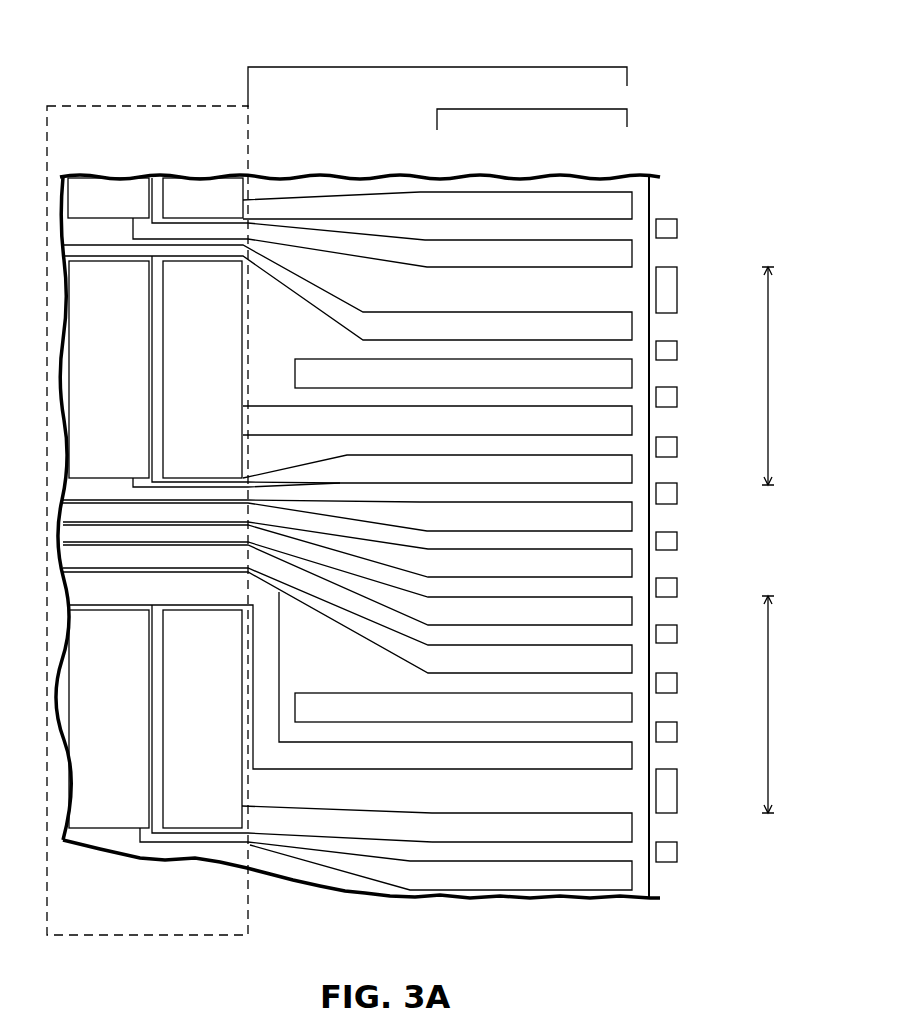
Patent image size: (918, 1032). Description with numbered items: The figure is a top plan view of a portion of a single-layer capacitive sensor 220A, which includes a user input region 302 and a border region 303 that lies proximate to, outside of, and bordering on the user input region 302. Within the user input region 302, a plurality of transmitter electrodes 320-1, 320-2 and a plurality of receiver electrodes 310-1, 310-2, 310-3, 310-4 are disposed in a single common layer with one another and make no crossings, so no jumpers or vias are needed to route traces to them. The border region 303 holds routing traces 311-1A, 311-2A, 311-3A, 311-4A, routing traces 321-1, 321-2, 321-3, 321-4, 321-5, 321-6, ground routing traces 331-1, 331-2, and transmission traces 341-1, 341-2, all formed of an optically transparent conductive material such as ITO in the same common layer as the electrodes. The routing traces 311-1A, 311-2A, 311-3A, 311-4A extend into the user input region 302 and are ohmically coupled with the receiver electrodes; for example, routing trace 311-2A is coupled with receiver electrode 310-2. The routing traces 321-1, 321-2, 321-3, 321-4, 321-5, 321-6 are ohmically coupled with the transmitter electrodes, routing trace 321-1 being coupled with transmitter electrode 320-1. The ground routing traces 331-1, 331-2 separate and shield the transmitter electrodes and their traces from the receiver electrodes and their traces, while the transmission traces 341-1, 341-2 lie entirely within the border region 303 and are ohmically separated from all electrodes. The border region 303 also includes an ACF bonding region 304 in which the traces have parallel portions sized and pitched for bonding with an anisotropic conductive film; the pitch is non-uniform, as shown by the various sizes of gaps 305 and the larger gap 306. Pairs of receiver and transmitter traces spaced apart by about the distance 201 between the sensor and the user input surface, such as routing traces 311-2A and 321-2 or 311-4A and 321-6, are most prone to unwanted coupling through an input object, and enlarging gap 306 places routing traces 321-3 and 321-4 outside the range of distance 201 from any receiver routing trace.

The single-layer capacitive sensor 220A is at (110, 27).
The user input region 302 is at (139, 106).
The border region 303 is at (307, 67).
The anisotropic conductive film (ACF) bonding region 304 is at (464, 109).
The gap 305 is at (678, 230).
The gap 306 is at (678, 280).
The distance 201 is at (768, 315).
The receiver electrode 310-1 is at (183, 207).
The receiver electrode 310-2 is at (88, 207).
The receiver electrode 310-3 is at (183, 629).
The receiver electrode 310-4 is at (88, 629).
The transmitter electrode 320-1 is at (183, 325).
The transmitter electrode 320-2 is at (88, 325).
The routing trace 311-1A is at (452, 215).
The routing trace 311-2A is at (452, 260).
The routing trace 311-3A is at (452, 835).
The routing trace 311-4A is at (452, 883).
The routing trace 331-1 is at (455, 332).
The routing trace 331-2 is at (455, 761).
The transmission trace 341-1 is at (455, 380).
The transmission trace 341-2 is at (455, 714).
The routing trace 321-1 is at (455, 427).
The routing trace 321-2 is at (455, 476).
The routing trace 321-3 is at (455, 523).
The routing trace 321-4 is at (455, 570).
The routing trace 321-5 is at (455, 618).
The routing trace 321-6 is at (455, 666).